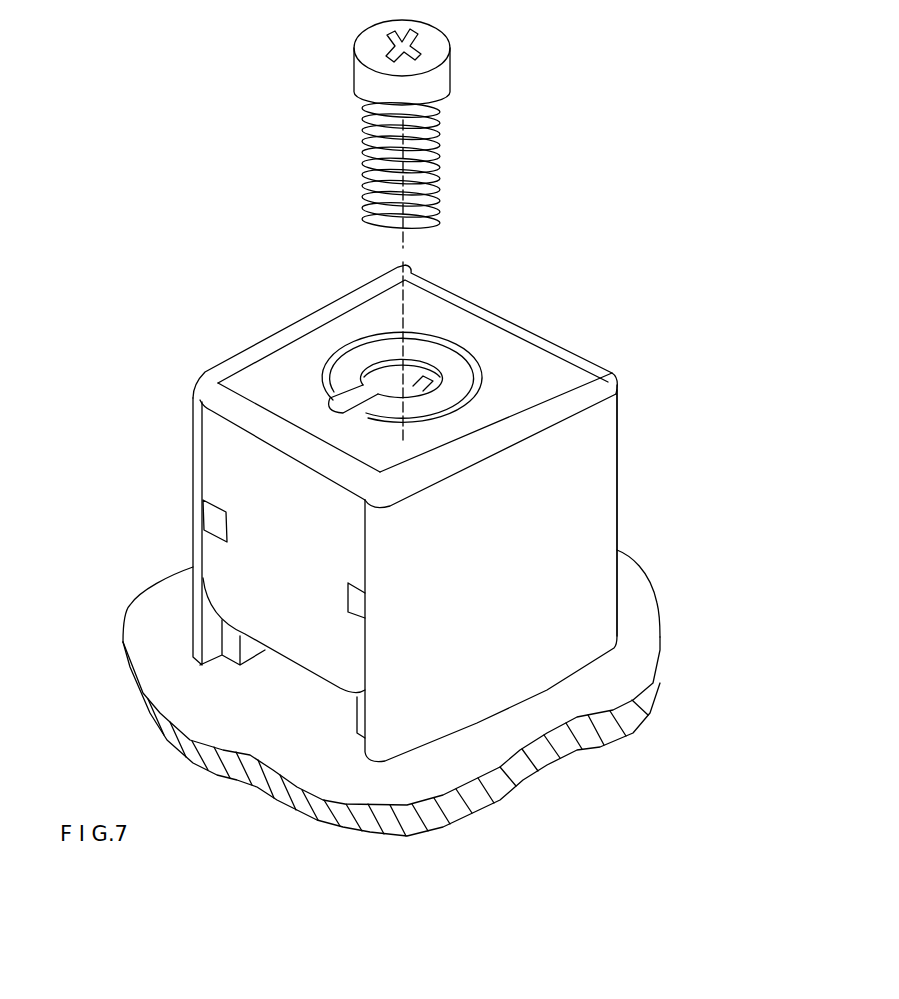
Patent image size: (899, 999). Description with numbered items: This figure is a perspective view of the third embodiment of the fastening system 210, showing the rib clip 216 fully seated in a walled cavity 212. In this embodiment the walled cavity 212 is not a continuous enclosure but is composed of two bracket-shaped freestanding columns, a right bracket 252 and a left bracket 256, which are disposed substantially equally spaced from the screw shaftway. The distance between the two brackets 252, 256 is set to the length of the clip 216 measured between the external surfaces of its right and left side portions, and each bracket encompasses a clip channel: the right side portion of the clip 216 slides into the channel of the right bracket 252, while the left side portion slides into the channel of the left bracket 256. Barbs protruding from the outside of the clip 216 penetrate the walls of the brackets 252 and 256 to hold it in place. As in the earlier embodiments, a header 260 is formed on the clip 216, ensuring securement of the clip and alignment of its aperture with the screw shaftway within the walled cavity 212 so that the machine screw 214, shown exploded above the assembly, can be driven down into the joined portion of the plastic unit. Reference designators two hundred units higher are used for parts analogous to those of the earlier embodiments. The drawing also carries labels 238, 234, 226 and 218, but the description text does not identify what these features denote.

The fastening system 210 is at (83, 40).
The machine screw 214 is at (457, 75).
The threaded shaft 238 is at (442, 163).
The central axis 234 is at (400, 250).
The clip 216 is at (424, 382).
The header 260 is at (318, 322).
The screw opening 226 is at (288, 385).
The walled cavity 212 is at (624, 522).
The right bracket 252 is at (600, 578).
The left bracket 256 is at (193, 483).
The base plate 218 is at (618, 680).